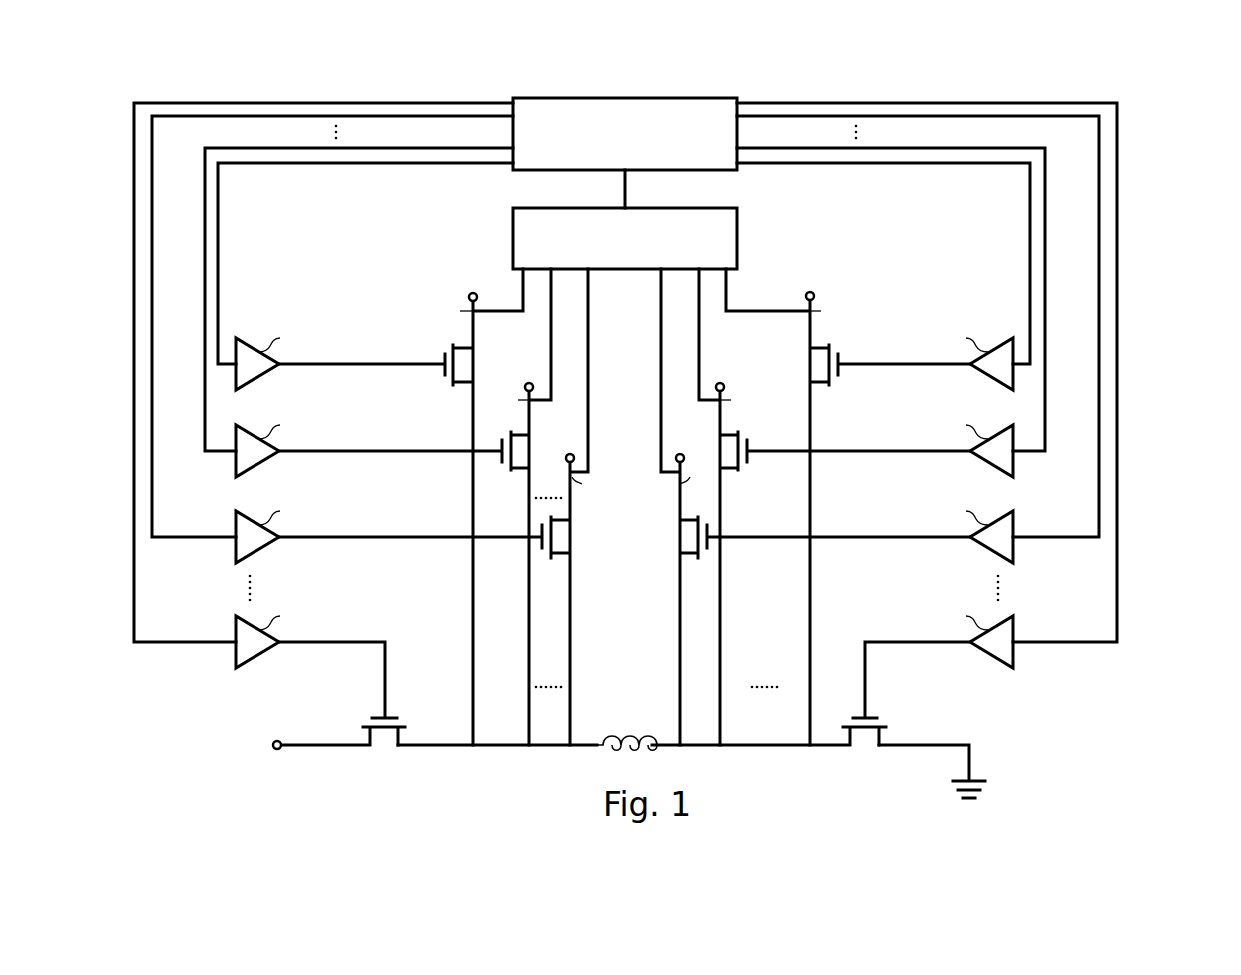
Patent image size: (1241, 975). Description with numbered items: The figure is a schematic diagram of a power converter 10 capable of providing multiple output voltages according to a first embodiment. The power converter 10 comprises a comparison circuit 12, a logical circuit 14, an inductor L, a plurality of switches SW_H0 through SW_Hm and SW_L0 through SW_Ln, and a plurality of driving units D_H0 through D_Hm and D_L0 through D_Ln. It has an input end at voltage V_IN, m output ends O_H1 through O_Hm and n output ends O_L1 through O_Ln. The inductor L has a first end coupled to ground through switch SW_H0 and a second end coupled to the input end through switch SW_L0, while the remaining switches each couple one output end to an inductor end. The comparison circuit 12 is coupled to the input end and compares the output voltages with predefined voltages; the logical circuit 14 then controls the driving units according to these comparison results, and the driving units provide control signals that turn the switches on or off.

The power converter 10 is at (679, 416).
The comparison circuit 12 is at (738, 240).
The logical circuit 14 is at (622, 97).